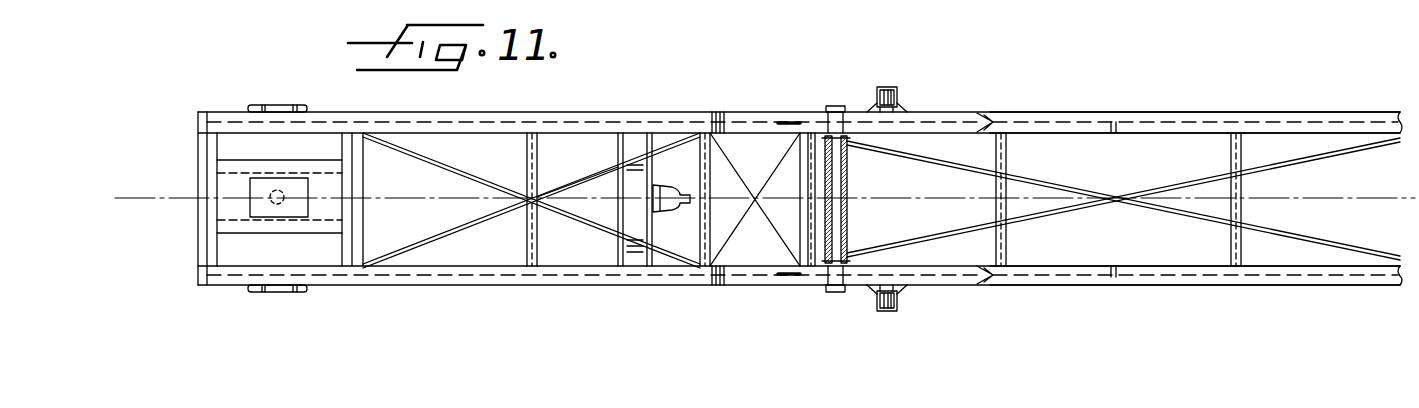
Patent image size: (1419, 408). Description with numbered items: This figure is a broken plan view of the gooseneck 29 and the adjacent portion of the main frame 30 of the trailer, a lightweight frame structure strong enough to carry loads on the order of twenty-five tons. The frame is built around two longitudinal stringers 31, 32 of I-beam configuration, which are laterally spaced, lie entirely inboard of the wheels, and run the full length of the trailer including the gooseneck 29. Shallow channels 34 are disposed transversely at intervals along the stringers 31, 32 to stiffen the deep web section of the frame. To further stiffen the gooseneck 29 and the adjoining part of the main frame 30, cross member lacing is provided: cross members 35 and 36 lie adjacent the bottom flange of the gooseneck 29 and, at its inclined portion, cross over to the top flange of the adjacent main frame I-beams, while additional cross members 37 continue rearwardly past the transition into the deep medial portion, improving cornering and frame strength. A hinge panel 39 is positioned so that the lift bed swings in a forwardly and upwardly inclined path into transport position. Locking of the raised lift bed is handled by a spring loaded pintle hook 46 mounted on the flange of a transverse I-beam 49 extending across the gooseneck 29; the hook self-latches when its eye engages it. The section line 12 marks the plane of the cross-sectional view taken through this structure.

The section line 12- 12 is at (268, 330).
The gooseneck 29 is at (473, 287).
The main frame 30 is at (1105, 296).
The longitudinal stringer 31 is at (1166, 287).
The longitudinal stringer 32 is at (1170, 115).
The shallow channel 34 is at (540, 252).
The cross member 35 is at (426, 237).
The cross member 36 is at (768, 173).
The cross member 37 is at (1052, 186).
The hinge panel 39 is at (862, 190).
The pintle hook 46 is at (688, 165).
The transverse I-beam 49 is at (593, 181).